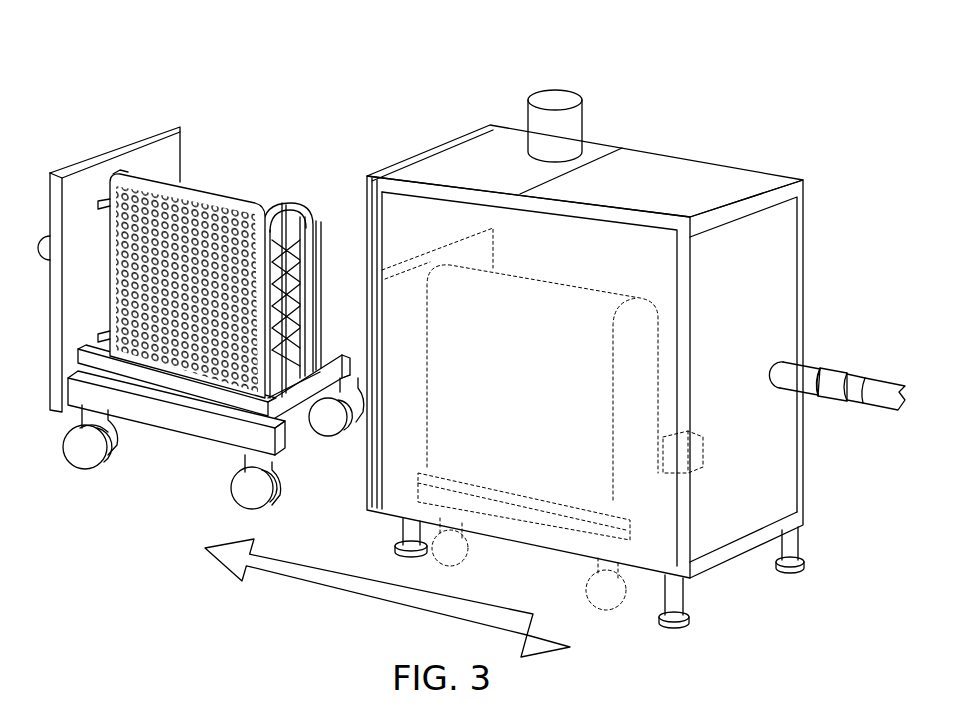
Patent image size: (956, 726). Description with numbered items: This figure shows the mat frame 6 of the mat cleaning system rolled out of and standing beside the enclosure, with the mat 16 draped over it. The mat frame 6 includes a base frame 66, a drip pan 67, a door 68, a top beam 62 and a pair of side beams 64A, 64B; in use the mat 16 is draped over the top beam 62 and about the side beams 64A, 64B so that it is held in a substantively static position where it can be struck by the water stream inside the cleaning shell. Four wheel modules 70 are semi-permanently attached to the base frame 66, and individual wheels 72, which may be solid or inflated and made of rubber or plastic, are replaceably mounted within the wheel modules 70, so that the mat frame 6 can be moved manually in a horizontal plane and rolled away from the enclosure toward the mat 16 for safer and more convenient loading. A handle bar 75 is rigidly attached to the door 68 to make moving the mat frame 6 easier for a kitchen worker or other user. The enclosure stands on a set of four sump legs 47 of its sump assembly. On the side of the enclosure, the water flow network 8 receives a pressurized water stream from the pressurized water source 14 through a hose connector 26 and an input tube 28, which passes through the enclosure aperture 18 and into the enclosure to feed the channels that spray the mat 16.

The mat frame 6 is at (150, 125).
The water flow network 8 is at (837, 376).
The pressurized water source 14 is at (885, 392).
The mat 16 is at (233, 239).
The enclosure aperture 18 is at (812, 378).
The hose connector 26 is at (840, 382).
The input tube 28 is at (830, 381).
The sump legs 47 is at (398, 538).
The top beam 62 is at (305, 205).
The side beam 64A is at (282, 200).
The side beam 64B is at (318, 217).
The base frame 66 is at (183, 422).
The drip pan 67 is at (163, 381).
The door 68 is at (82, 162).
The wheel modules 70 is at (257, 458).
The wheels 72 is at (75, 463).
The handle bar 75 is at (38, 238).